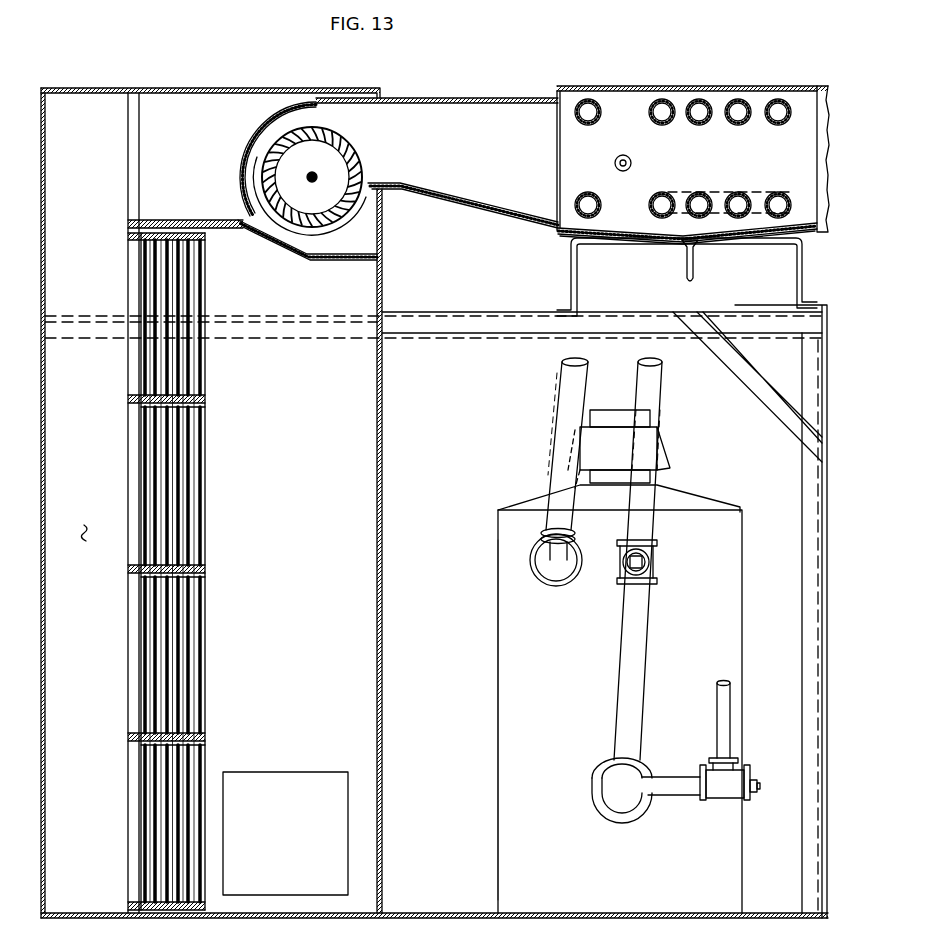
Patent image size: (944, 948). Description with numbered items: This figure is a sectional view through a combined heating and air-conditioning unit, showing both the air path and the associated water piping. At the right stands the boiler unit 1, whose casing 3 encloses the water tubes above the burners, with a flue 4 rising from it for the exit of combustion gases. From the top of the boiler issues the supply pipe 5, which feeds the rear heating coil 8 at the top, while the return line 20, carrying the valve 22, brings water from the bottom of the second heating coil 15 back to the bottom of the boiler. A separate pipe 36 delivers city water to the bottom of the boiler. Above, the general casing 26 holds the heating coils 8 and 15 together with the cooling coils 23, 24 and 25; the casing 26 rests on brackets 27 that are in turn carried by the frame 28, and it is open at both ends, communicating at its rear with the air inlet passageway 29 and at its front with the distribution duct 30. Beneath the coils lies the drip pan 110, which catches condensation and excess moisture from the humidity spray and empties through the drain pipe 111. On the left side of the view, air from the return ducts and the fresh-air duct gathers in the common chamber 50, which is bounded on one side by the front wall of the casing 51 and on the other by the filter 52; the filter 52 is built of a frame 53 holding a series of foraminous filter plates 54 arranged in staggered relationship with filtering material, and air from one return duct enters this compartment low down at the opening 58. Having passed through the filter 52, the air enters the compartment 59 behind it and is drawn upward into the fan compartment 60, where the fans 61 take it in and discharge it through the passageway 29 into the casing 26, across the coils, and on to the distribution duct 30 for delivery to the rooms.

The boiler unit 1 is at (497, 737).
The casing 3 is at (523, 657).
The flue 4 is at (612, 410).
The supply pipe 5 is at (565, 395).
The rear heating coil 8 is at (586, 99).
The second heating coil 15 is at (660, 99).
The return line 20 is at (657, 393).
The valve 22 is at (657, 565).
The cooling coil 23 is at (696, 99).
The cooling coil 24 is at (735, 99).
The cooling coil 25 is at (770, 99).
The general casing 26 is at (628, 85).
The brackets 27 is at (797, 268).
The frame 28 is at (802, 477).
The air inlet passageway 29 is at (458, 110).
The distribution duct 30 is at (817, 100).
The pipe 36 is at (722, 713).
The common chamber 50 is at (352, 515).
The front wall of the casing 51 is at (383, 577).
The filter 52 is at (206, 585).
The frame 53 is at (130, 620).
The foraminous filter plates 54 is at (196, 365).
The inlet opening 58 is at (315, 790).
The compartment 59 is at (86, 522).
The fan compartment 60 is at (175, 105).
The fans 61 is at (280, 116).
The drip pan 110 is at (628, 240).
The drain pipe 111 is at (687, 268).